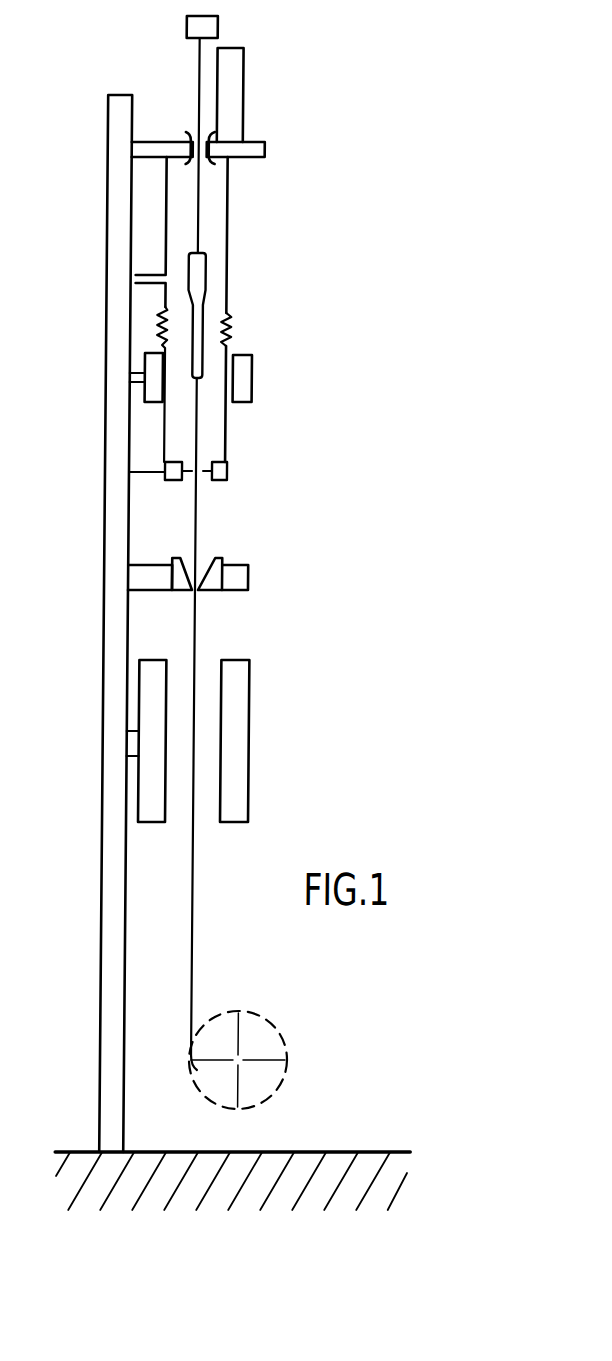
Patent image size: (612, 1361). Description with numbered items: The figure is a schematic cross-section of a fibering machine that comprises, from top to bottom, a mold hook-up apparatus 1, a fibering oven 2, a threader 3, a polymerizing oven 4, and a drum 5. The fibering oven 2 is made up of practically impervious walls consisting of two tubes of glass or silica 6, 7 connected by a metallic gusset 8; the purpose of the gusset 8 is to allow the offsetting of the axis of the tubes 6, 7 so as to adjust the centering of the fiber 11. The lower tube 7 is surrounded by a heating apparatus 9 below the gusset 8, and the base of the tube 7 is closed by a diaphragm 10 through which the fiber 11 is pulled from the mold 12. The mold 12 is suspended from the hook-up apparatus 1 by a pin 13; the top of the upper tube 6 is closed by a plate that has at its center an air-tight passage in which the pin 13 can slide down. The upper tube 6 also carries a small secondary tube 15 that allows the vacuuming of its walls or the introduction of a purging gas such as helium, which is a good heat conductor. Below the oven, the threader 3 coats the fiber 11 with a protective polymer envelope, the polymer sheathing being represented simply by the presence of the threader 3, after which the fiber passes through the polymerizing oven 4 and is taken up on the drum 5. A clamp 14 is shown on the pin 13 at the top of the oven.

The mold hook-up apparatus 1 is at (188, 28).
The fibering oven 2 is at (269, 288).
The threader 3 is at (222, 562).
The polymerizing oven 4 is at (240, 745).
The drum 5 is at (266, 1030).
The tube 6 is at (230, 248).
The tube 7 is at (230, 440).
The metallic gusset 8 is at (236, 330).
The heating apparatus 9 is at (244, 382).
The diaphragm 10 is at (198, 474).
The fiber 11 is at (201, 530).
The mold 12 is at (195, 338).
The pin 13 is at (201, 250).
The clamp 14 is at (192, 164).
The secondary tube 15 is at (160, 278).